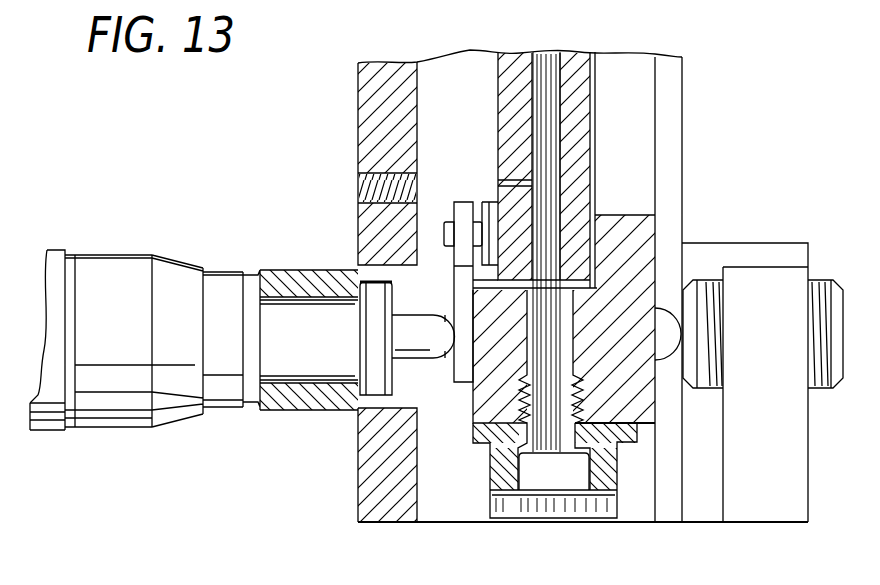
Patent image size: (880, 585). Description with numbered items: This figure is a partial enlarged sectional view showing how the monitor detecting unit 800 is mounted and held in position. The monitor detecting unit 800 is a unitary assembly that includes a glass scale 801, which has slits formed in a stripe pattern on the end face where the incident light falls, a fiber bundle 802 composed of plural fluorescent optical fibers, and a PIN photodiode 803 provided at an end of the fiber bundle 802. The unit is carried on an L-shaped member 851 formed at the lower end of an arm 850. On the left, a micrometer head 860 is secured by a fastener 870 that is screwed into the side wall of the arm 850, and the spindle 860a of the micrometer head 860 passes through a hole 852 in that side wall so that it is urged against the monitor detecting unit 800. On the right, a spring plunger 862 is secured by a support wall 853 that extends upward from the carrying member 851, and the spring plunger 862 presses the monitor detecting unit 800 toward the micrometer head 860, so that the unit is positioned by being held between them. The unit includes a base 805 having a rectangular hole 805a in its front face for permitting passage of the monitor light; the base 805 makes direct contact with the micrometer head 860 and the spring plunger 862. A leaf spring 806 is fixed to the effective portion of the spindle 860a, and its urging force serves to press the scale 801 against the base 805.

The monitor detecting unit 800 is at (497, 73).
The arm 850 is at (357, 117).
The L-shaped member 851 is at (428, 495).
The hole 852 is at (359, 456).
The glass scale 801 is at (582, 148).
The fiber bundle 802 is at (580, 187).
The PIN photodiode 803 is at (570, 477).
The base 805 is at (640, 401).
The rectangular hole 805a is at (635, 108).
The leaf spring 806 is at (460, 277).
The support wall 853 is at (775, 473).
The micrometer head 860 is at (133, 402).
The spindle 860a is at (420, 342).
The spring plunger 862 is at (818, 300).
The fastener 870 is at (308, 393).